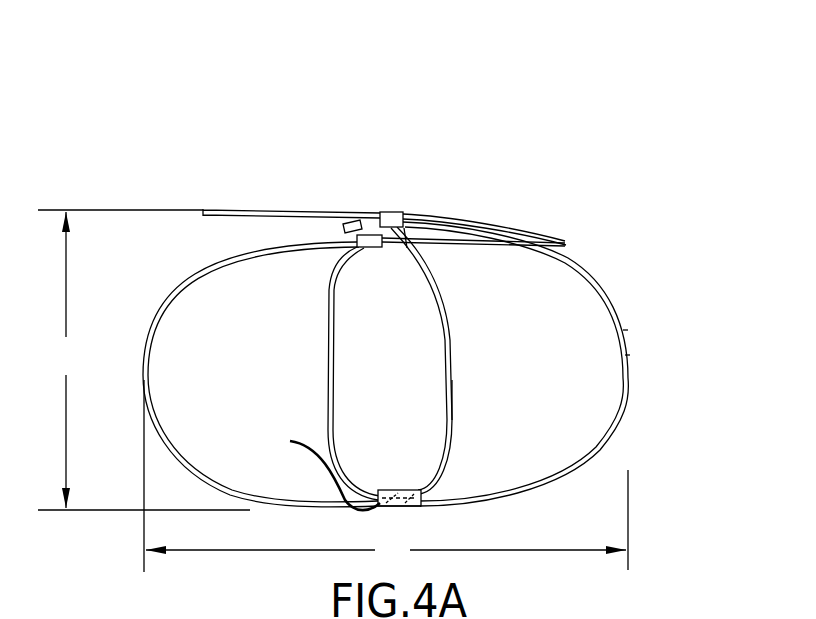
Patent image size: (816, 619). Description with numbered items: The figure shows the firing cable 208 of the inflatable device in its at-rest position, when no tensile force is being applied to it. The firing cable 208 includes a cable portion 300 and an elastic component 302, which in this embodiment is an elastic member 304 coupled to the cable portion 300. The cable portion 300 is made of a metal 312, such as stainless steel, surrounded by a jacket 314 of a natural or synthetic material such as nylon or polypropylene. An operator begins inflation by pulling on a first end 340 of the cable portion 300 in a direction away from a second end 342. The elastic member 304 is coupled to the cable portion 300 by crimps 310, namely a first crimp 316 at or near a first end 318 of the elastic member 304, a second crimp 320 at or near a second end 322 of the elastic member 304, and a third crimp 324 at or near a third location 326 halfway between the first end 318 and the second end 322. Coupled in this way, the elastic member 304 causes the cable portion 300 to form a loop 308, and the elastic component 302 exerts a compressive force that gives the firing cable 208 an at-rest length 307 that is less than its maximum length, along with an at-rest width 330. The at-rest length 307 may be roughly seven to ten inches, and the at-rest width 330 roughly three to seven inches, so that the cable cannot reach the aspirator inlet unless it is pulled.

The firing cable 208 is at (400, 112).
The cable portion 300 is at (617, 308).
The elastic component 302 is at (462, 352).
The elastic member 304 is at (455, 420).
The at-rest length 307 is at (386, 476).
The loop 308 is at (462, 212).
The crimps 310 is at (414, 508).
The metal 312 is at (628, 330).
The jacket 314 is at (630, 355).
The first crimp 316 is at (392, 212).
The first end 318 is at (360, 222).
The second crimp 320 is at (370, 248).
The second end 322 is at (406, 248).
The third crimp 324 is at (393, 492).
The third location 326 is at (316, 470).
The at-rest width 330 is at (144, 360).
The first end 340 is at (203, 210).
The second end 342 is at (565, 243).